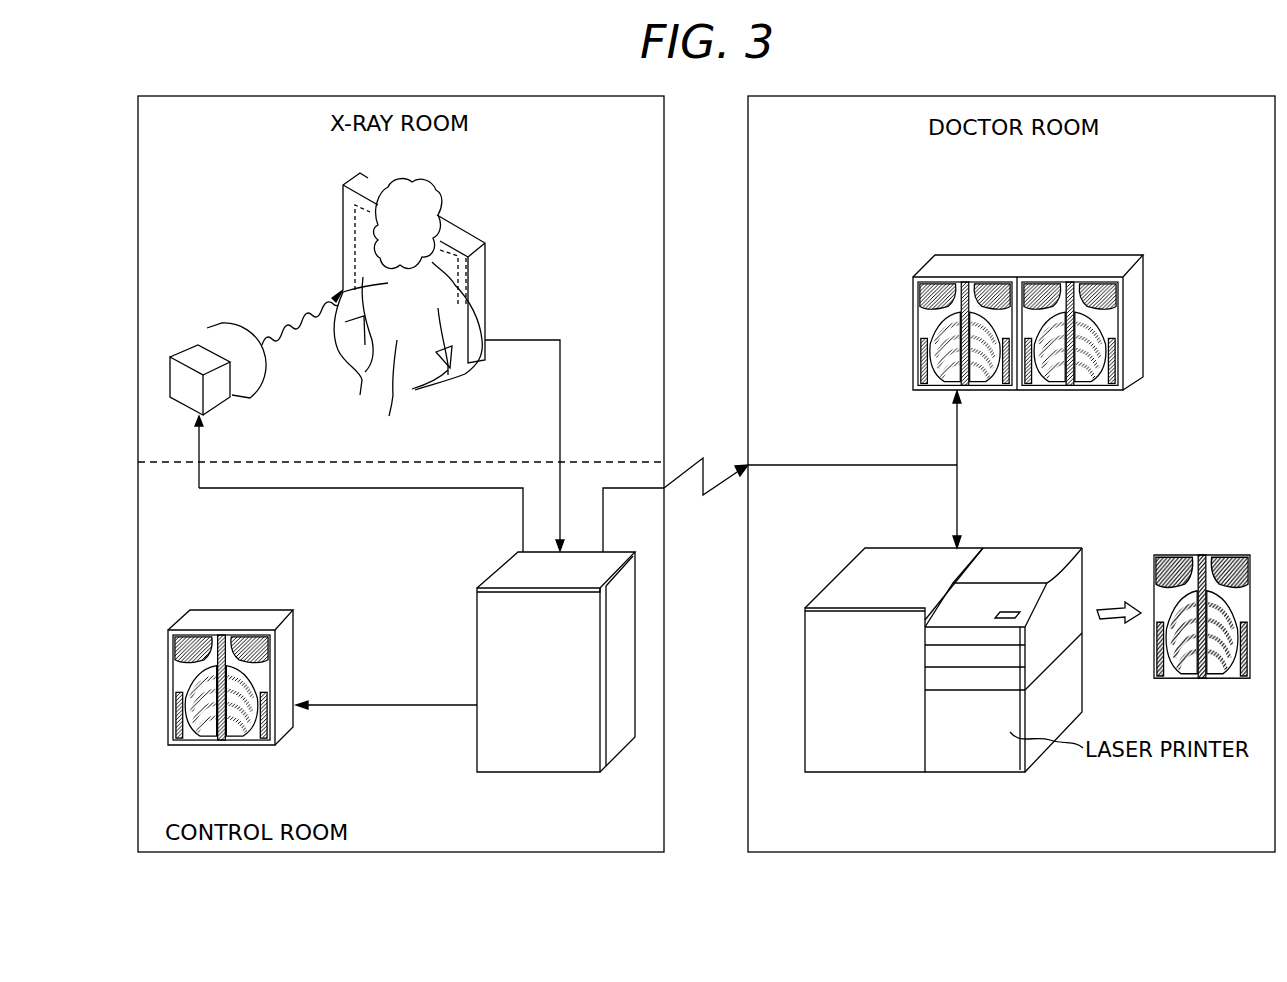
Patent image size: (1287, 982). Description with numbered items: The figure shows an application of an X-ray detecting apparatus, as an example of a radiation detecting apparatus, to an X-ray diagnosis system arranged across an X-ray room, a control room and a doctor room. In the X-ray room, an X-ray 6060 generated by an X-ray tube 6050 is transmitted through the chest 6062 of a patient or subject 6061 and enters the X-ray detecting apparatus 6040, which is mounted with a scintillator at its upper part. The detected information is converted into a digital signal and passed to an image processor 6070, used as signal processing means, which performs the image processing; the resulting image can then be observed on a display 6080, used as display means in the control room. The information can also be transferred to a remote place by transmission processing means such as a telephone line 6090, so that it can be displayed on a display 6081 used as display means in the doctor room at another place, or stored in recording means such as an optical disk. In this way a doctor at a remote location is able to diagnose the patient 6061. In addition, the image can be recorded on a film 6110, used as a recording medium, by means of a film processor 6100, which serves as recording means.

The X-ray detecting apparatus 6040 is at (483, 278).
The X-ray tube 6050 is at (192, 350).
The X-ray 6060 is at (292, 312).
The patient 6061 is at (436, 186).
The chest 6062 is at (394, 400).
The image processor 6070 is at (510, 780).
The display 6080 is at (237, 620).
The display 6081 is at (955, 265).
The telephone line 6090 is at (702, 458).
The film processor 6100 is at (858, 777).
The film 6110 is at (1178, 553).